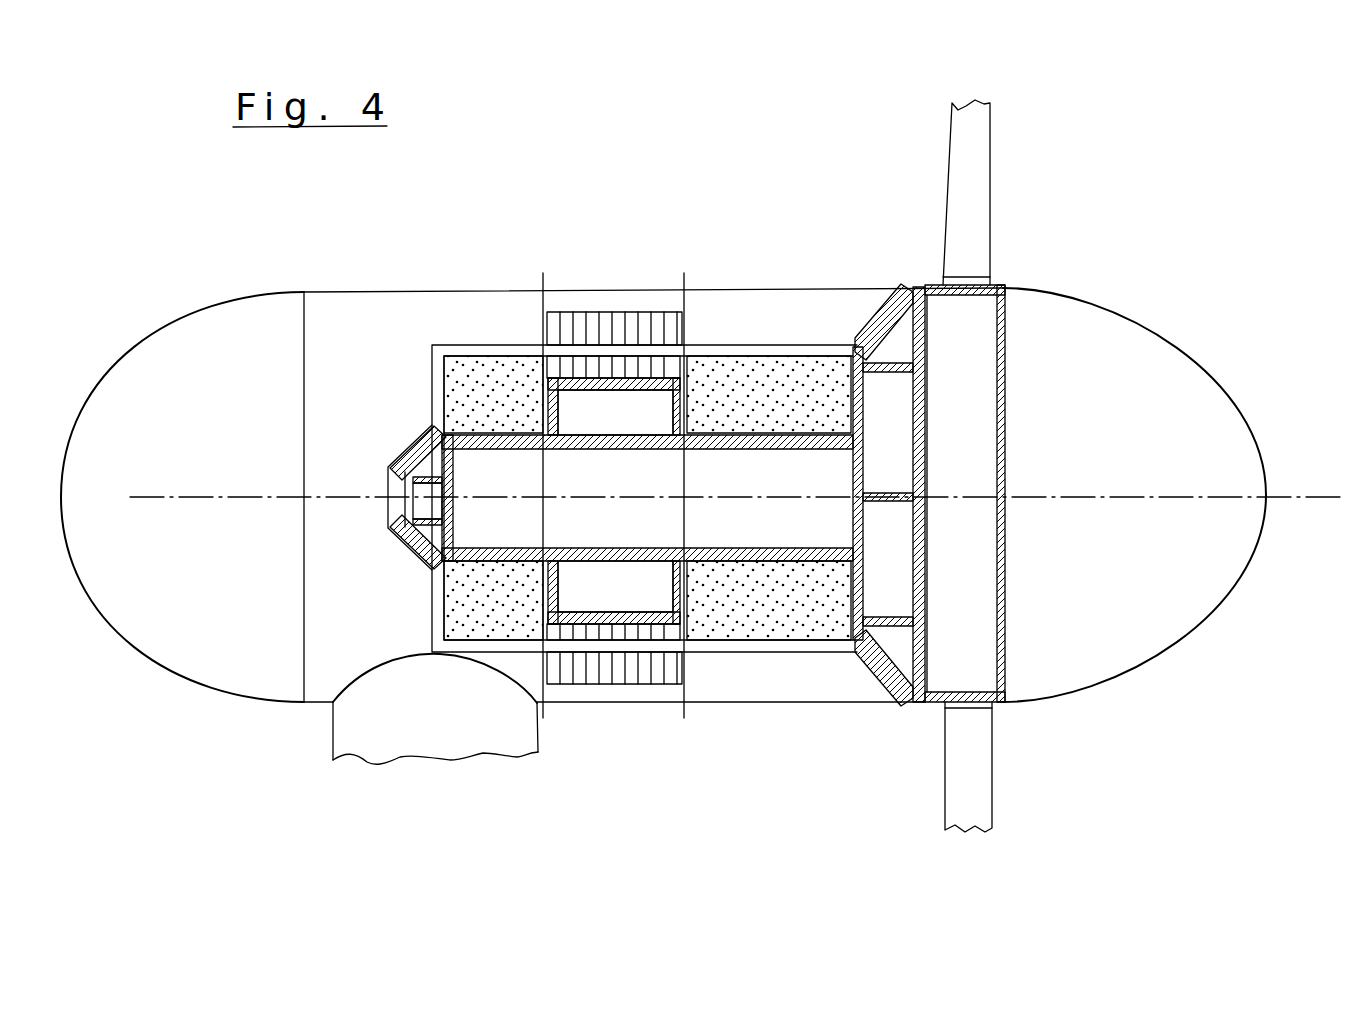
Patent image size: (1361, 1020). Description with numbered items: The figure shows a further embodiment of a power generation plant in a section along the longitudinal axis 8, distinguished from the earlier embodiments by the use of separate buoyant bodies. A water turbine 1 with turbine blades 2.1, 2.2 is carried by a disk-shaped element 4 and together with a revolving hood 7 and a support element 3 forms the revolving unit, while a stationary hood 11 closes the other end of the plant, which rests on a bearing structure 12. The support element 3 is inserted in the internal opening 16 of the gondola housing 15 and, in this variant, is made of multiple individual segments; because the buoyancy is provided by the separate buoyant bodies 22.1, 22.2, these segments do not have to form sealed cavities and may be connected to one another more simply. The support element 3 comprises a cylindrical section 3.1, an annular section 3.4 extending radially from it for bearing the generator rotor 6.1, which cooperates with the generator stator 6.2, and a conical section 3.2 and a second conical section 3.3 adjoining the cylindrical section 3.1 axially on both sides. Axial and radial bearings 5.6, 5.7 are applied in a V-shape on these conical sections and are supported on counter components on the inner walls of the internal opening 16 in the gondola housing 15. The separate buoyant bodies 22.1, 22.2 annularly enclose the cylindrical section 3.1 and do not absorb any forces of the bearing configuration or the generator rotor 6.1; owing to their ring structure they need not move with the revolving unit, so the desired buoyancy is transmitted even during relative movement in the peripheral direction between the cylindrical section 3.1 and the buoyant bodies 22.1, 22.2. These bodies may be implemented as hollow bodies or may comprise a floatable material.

The water turbine 1 is at (978, 81).
The turbine blade 2.1 is at (975, 185).
The turbine blade 2.2 is at (987, 785).
The support element 3 is at (738, 543).
The cylindrical section 3.1 is at (470, 430).
The conical section 3.2 is at (425, 452).
The conical section 3.3 is at (885, 313).
The annular section 3.4 is at (560, 356).
The disk-shaped element 4 is at (1003, 287).
The axial and radial bearing 5.6 is at (895, 702).
The axial and radial bearing 5.7 is at (393, 459).
The generator rotor 6.1 is at (680, 348).
The generator stator 6.2 is at (672, 367).
The revolving hood 7 is at (1185, 605).
The longitudinal axis 8 is at (1327, 498).
The stationary hood 11 is at (210, 643).
The bearing structure 12 is at (397, 730).
The gondola housing 15 is at (328, 667).
The internal opening 16 is at (717, 643).
The separate buoyant body 22.1 is at (765, 603).
The separate buoyant body 22.2 is at (495, 598).